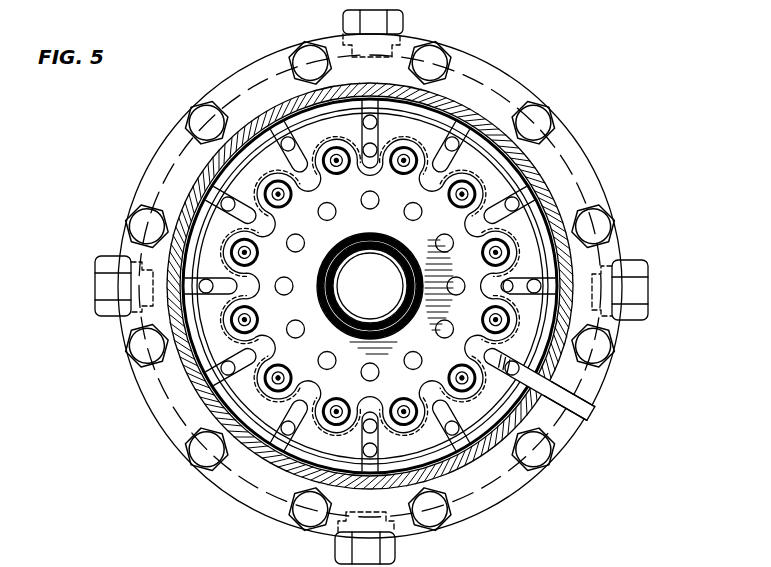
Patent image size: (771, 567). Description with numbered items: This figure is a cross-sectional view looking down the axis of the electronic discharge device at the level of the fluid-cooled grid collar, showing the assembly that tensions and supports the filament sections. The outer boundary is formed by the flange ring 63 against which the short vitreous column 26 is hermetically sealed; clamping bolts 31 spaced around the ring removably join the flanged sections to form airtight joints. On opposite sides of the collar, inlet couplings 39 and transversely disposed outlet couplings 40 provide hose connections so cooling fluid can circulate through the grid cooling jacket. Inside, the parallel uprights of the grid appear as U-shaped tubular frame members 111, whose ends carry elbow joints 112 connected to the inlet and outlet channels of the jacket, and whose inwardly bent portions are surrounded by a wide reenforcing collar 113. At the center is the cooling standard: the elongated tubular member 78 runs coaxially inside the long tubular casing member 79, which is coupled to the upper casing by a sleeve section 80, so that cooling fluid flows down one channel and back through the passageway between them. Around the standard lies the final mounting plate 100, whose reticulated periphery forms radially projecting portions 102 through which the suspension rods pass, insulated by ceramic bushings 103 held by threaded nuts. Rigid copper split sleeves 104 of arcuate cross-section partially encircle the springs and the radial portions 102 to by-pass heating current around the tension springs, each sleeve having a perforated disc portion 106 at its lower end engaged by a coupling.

The short vitreous column 26 is at (558, 203).
The clamping bolts 31 is at (600, 228).
The inlet couplings 39 is at (100, 284).
The outlet couplings 40 is at (382, 25).
The flange ring 63 is at (578, 165).
The elongated tubular member 78 is at (364, 244).
The tubular casing member 79 is at (358, 243).
The sleeve section 80 is at (336, 248).
The final mounting plate 100 is at (461, 244).
The radially projecting portions 102 is at (217, 286).
The ceramic bushings 103 is at (226, 359).
The split sleeves 104 is at (230, 249).
The disc portion 106 is at (268, 226).
The U-shaped tubular frame members 111 is at (497, 374).
The elbow joints 112 is at (223, 187).
The reenforcing collar 113 is at (588, 384).